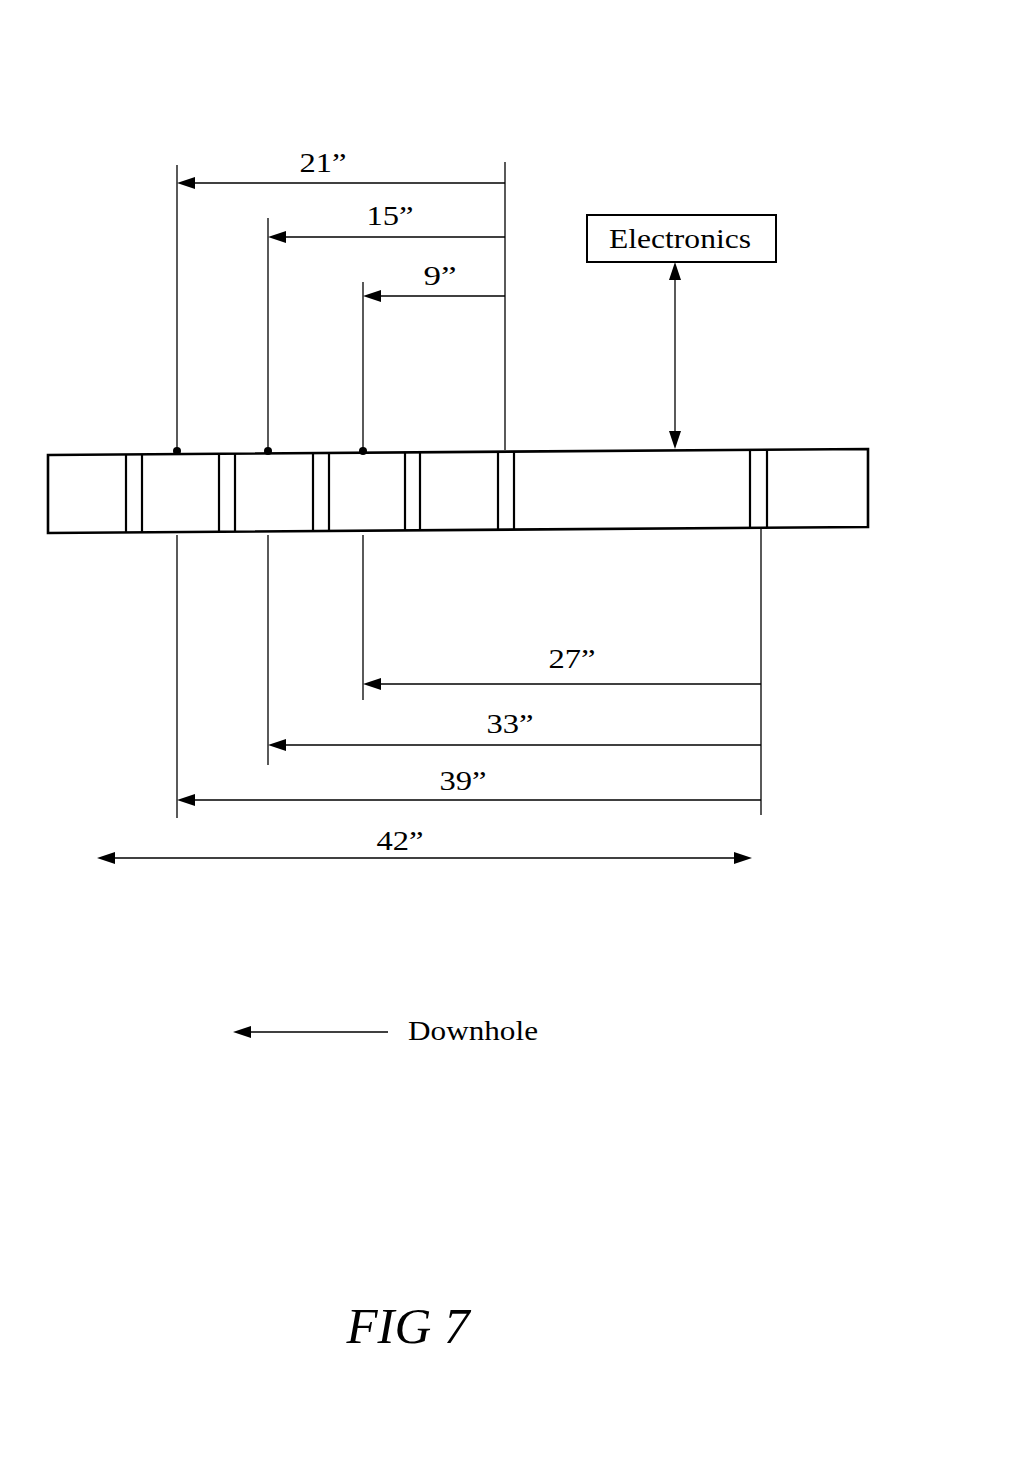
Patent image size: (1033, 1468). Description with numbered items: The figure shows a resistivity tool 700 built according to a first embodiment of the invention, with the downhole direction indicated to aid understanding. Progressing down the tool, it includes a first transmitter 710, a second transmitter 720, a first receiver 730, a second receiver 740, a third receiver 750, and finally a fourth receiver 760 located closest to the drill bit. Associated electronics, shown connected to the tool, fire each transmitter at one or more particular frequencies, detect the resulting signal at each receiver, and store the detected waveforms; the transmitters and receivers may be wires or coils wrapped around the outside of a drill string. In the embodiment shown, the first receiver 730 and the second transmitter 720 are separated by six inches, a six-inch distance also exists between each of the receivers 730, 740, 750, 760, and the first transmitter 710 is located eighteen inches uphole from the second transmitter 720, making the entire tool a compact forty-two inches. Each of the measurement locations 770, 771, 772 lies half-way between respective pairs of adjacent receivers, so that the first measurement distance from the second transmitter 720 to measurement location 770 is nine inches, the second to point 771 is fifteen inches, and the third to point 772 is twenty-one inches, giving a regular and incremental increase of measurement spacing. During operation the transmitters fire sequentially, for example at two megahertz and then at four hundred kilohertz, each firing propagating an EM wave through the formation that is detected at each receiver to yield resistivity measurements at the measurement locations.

The resistivity tool 700 is at (597, 113).
The first transmitter 710 is at (767, 537).
The second transmitter 720 is at (508, 447).
The first receiver 730 is at (407, 535).
The second receiver 740 is at (318, 535).
The third receiver 750 is at (223, 535).
The fourth receiver 760 is at (135, 535).
The measurement location 770 is at (362, 447).
The measurement location 771 is at (265, 447).
The measurement location 772 is at (173, 447).